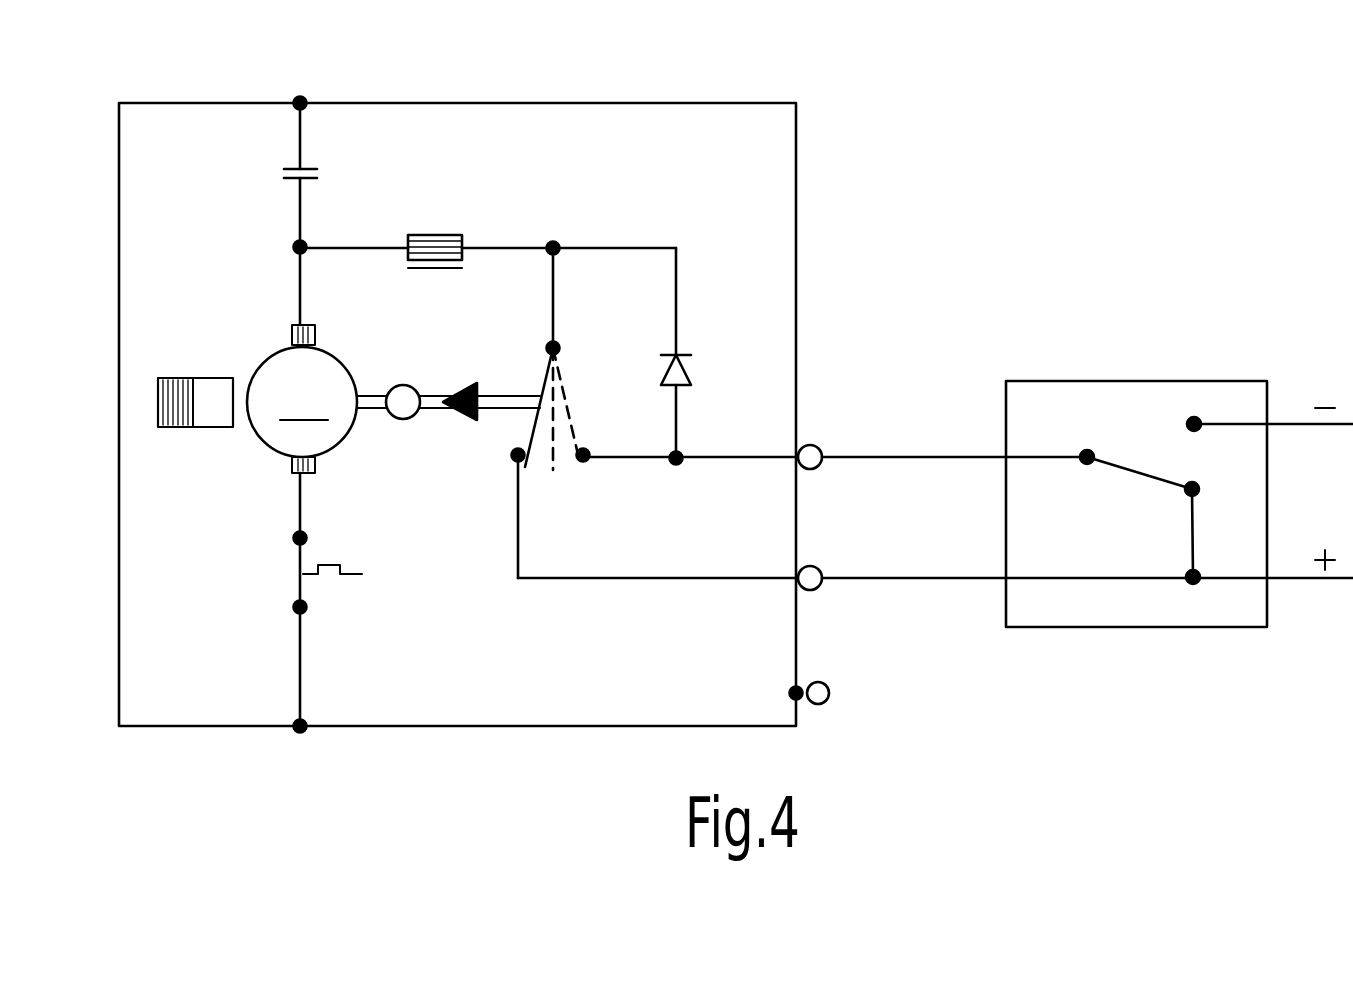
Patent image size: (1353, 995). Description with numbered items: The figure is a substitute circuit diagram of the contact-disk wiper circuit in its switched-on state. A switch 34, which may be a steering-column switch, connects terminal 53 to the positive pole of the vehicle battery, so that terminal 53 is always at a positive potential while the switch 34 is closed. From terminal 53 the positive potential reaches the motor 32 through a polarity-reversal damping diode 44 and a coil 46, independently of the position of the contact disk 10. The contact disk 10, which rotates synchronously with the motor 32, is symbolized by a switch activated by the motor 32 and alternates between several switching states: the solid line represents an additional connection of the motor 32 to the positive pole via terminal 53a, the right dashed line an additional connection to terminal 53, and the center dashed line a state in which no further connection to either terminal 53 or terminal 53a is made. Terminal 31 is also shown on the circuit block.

The contact disk 10 is at (502, 465).
The ground terminal 31 is at (830, 692).
The motor 32 is at (273, 447).
The switch 34 is at (1133, 462).
The polarity-reversal damping diode 44 is at (692, 368).
The coil 46 is at (438, 235).
The terminal 53 is at (942, 445).
The terminal 53a is at (995, 567).